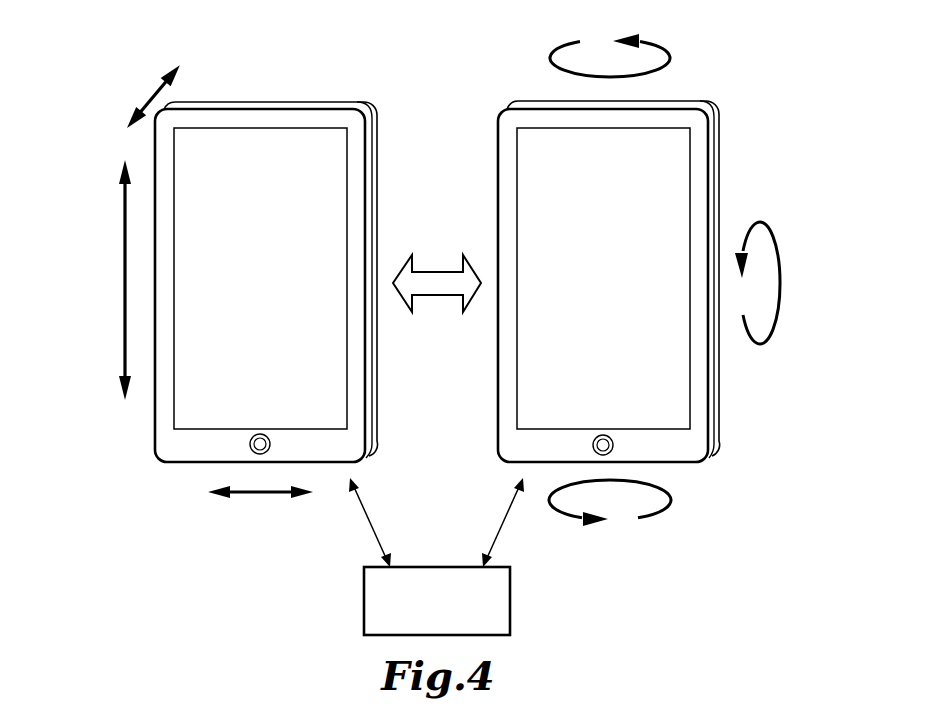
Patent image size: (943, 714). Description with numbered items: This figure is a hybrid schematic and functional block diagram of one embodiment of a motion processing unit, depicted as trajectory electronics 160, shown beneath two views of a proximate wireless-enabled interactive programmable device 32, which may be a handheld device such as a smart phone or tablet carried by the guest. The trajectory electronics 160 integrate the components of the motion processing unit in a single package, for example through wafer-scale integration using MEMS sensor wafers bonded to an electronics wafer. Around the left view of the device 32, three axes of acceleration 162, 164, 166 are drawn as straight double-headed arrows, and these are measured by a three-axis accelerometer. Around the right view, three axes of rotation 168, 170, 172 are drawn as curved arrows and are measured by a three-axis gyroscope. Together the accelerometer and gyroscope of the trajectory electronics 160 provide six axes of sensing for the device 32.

The proximate wireless-enabled interactive programmable device 32 is at (319, 97).
The trajectory electronics 160 is at (510, 598).
The axis of acceleration 162 is at (262, 495).
The axis of acceleration 164 is at (123, 292).
The axis of acceleration 166 is at (152, 98).
The axis of rotation 168 is at (673, 497).
The axis of rotation 170 is at (781, 283).
The axis of rotation 172 is at (560, 46).